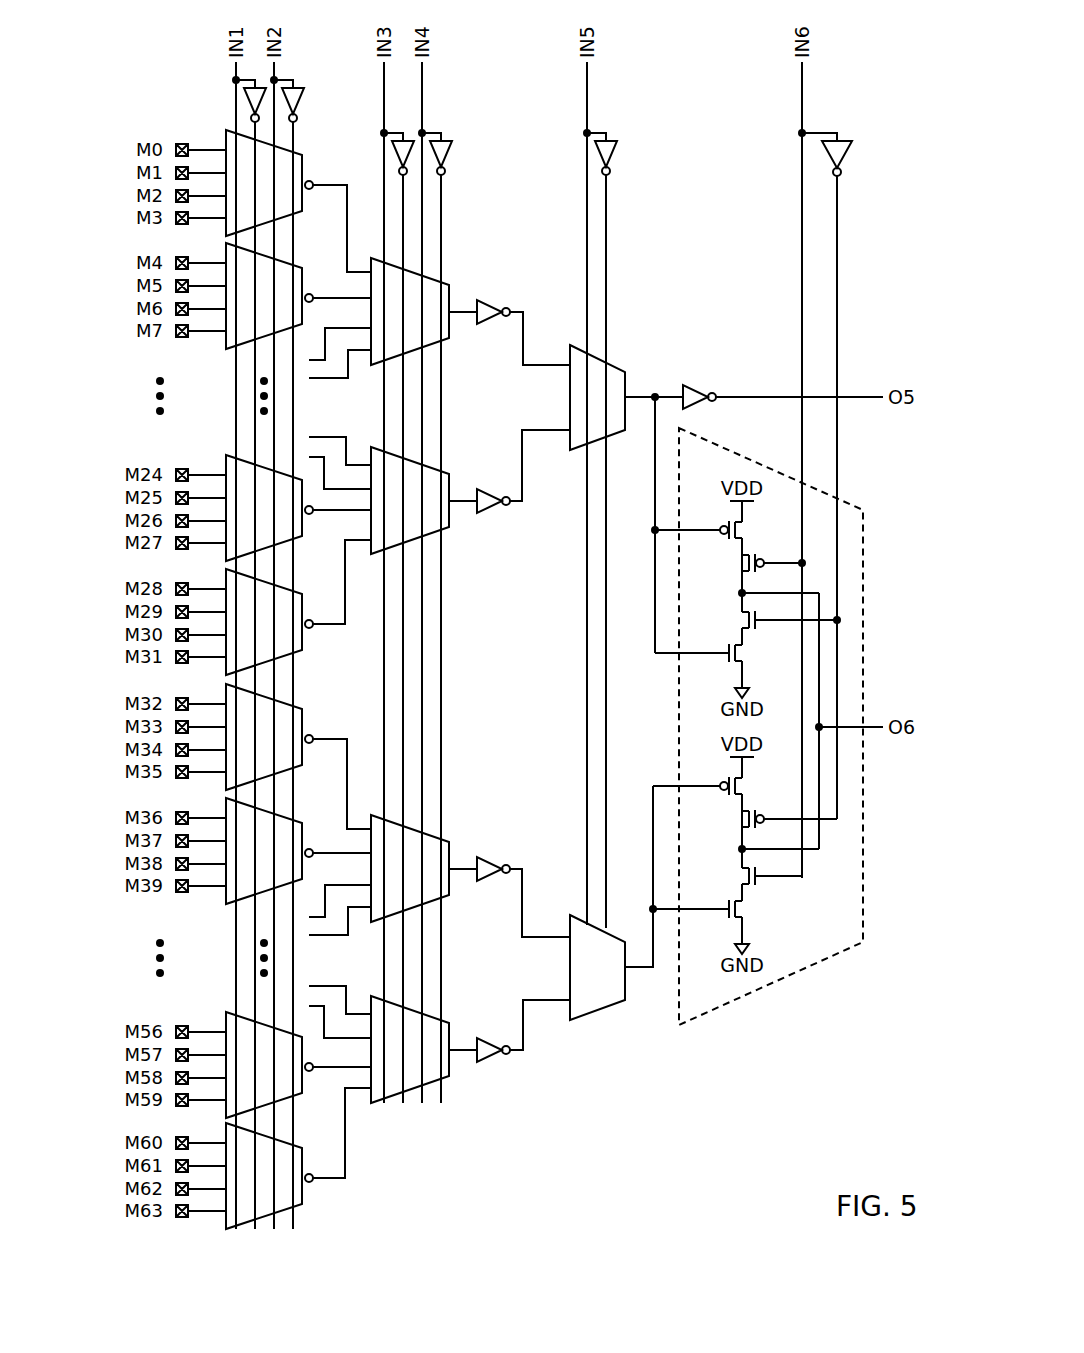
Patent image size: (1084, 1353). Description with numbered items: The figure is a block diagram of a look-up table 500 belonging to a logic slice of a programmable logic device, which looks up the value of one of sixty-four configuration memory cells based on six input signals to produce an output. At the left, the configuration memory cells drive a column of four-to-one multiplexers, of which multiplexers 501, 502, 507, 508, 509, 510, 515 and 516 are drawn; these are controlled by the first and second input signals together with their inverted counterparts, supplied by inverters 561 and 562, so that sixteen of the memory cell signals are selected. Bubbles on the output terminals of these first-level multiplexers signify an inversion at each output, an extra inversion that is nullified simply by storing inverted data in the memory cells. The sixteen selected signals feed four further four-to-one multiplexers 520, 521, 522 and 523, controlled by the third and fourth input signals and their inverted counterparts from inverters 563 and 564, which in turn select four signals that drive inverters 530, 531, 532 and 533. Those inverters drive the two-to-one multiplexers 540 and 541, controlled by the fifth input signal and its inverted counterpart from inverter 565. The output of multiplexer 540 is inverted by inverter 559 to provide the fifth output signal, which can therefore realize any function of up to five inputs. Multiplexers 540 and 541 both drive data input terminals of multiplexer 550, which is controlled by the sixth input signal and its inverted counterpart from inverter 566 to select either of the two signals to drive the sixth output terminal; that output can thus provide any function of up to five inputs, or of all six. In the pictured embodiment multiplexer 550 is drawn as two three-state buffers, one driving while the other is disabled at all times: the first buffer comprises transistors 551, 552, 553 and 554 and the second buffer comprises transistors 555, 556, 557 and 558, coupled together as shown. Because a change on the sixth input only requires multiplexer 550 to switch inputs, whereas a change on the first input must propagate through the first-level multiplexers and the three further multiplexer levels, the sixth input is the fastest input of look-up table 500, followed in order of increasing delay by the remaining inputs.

The look-up table 500 is at (173, 45).
The 4-to-1 multiplexer 501 is at (298, 201).
The 4-to-1 multiplexer 502 is at (298, 296).
The 4-to-1 multiplexer 507 is at (298, 508).
The 4-to-1 multiplexer 508 is at (298, 607).
The 4-to-1 multiplexer 509 is at (298, 756).
The 4-to-1 multiplexer 510 is at (298, 851).
The 4-to-1 multiplexer 515 is at (298, 1065).
The 4-to-1 multiplexer 516 is at (298, 1158).
The 4-to-1 multiplexer 520 is at (379, 318).
The 4-to-1 multiplexer 521 is at (379, 495).
The 4-to-1 multiplexer 522 is at (379, 875).
The 4-to-1 multiplexer 523 is at (379, 1044).
The inverter 530 is at (490, 305).
The inverter 531 is at (491, 514).
The inverter 532 is at (490, 861).
The inverter 533 is at (491, 1062).
The 2-to-1 multiplexer 540 is at (626, 397).
The 2-to-1 multiplexer 541 is at (611, 903).
The multiplexer 550 is at (676, 742).
The transistor 551 is at (729, 530).
The transistor 552 is at (746, 566).
The transistor 553 is at (746, 626).
The transistor 554 is at (738, 659).
The transistor 555 is at (730, 786).
The transistor 556 is at (746, 822).
The transistor 557 is at (746, 882).
The transistor 558 is at (738, 915).
The inverter 559 is at (694, 387).
The inverter 561 is at (246, 103).
The inverter 562 is at (300, 103).
The inverter 563 is at (394, 156).
The inverter 564 is at (450, 156).
The inverter 565 is at (615, 156).
The inverter 566 is at (848, 158).